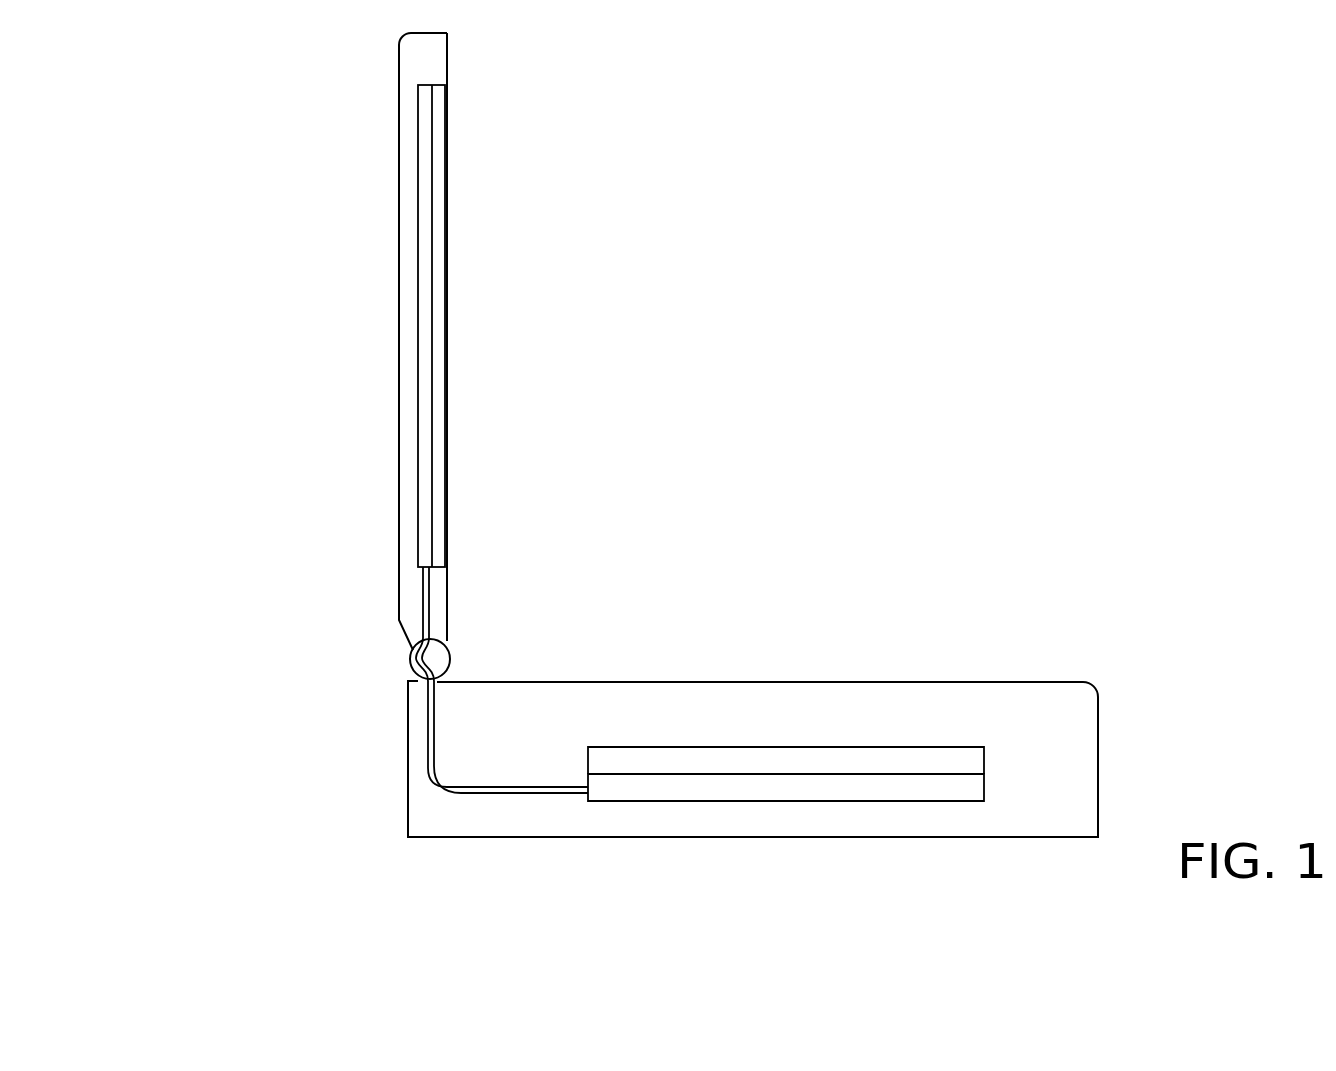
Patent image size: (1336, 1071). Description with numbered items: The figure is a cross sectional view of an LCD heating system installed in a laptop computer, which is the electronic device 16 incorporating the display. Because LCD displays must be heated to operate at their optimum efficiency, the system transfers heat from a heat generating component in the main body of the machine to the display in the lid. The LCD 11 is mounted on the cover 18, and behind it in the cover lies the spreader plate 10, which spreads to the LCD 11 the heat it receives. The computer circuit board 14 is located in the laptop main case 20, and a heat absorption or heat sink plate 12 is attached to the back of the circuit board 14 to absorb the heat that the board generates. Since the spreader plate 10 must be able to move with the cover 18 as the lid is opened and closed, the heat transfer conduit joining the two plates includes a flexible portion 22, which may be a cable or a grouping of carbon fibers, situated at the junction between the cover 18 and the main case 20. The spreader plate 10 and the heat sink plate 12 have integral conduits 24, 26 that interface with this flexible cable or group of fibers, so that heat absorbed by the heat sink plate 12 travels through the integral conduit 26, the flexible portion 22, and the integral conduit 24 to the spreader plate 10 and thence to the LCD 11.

The spreader plate 10 is at (424, 200).
The LCD 11 is at (438, 160).
The heat sink plate 12 is at (656, 788).
The circuit board 14 is at (699, 757).
The electronic device 16 is at (320, 716).
The cover 18 is at (386, 245).
The laptop main case 20 is at (398, 828).
The flexible portion 22 is at (412, 660).
The integral conduit 24 is at (420, 593).
The integral conduit 26 is at (430, 775).